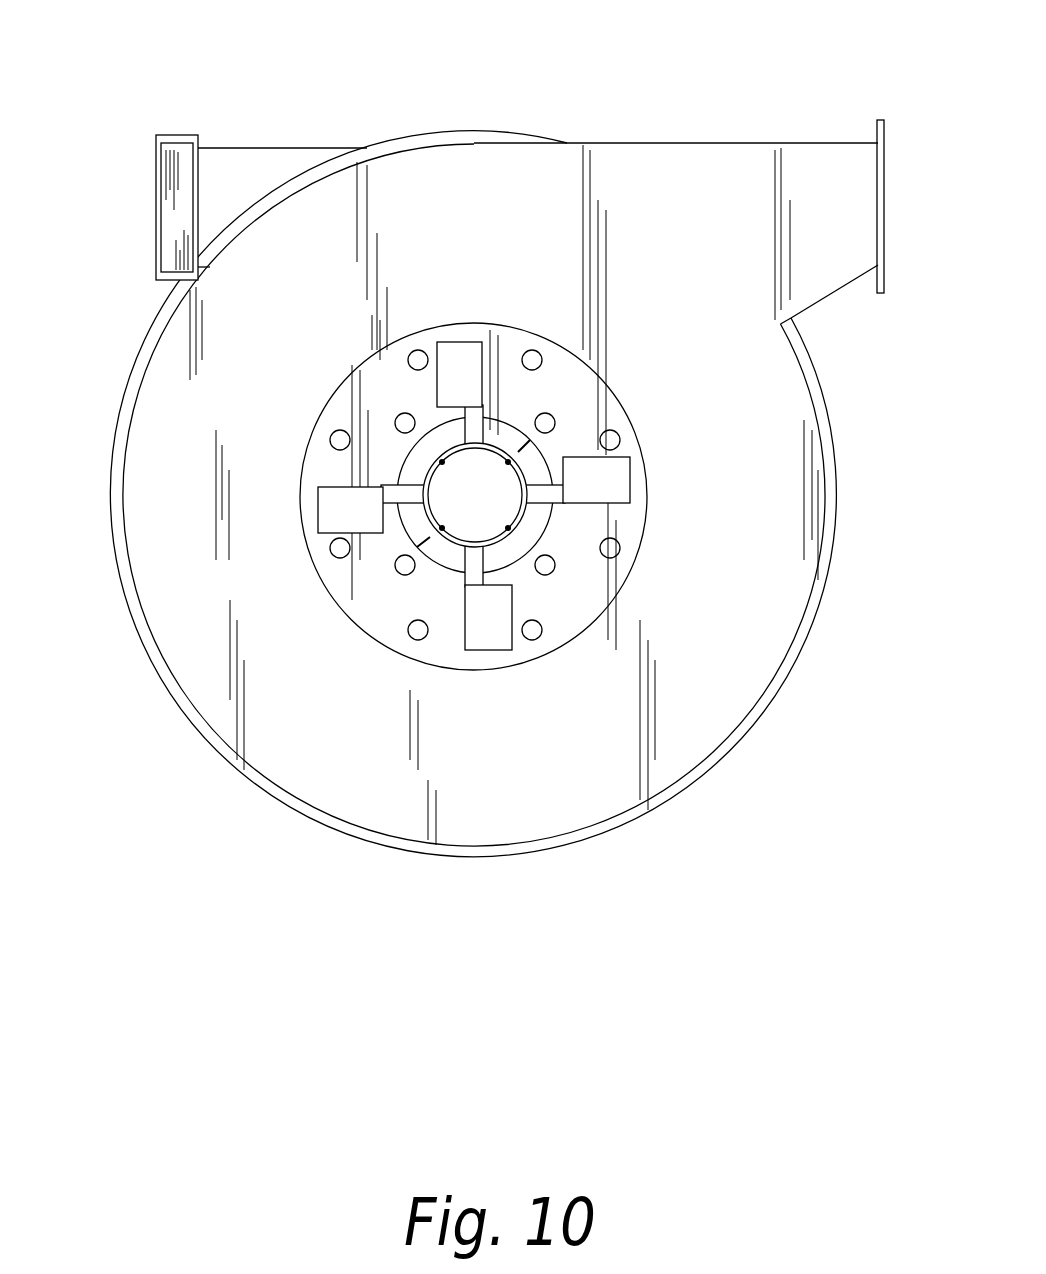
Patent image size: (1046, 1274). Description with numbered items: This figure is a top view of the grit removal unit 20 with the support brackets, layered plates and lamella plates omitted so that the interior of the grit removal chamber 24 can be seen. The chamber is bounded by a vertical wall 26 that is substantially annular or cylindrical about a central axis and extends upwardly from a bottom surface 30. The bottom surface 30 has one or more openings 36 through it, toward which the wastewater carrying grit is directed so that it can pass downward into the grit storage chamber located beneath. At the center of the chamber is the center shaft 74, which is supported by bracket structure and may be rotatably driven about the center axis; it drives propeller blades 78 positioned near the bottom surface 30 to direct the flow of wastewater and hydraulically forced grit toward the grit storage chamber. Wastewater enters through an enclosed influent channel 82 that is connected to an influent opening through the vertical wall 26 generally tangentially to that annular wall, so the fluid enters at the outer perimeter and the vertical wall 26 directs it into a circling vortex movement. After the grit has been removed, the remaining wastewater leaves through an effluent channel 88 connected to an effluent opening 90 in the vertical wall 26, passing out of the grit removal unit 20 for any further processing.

The grit removal unit 20 is at (105, 290).
The grit removal chamber 24 is at (540, 212).
The vertical wall 26 is at (242, 778).
The bottom surface 30 is at (306, 687).
The openings 36 is at (553, 417).
The center shaft 74 is at (450, 540).
The propeller blades 78 is at (338, 511).
The influent channel 82 is at (173, 160).
The effluent channel 88 is at (790, 320).
The effluent opening 90 is at (890, 186).